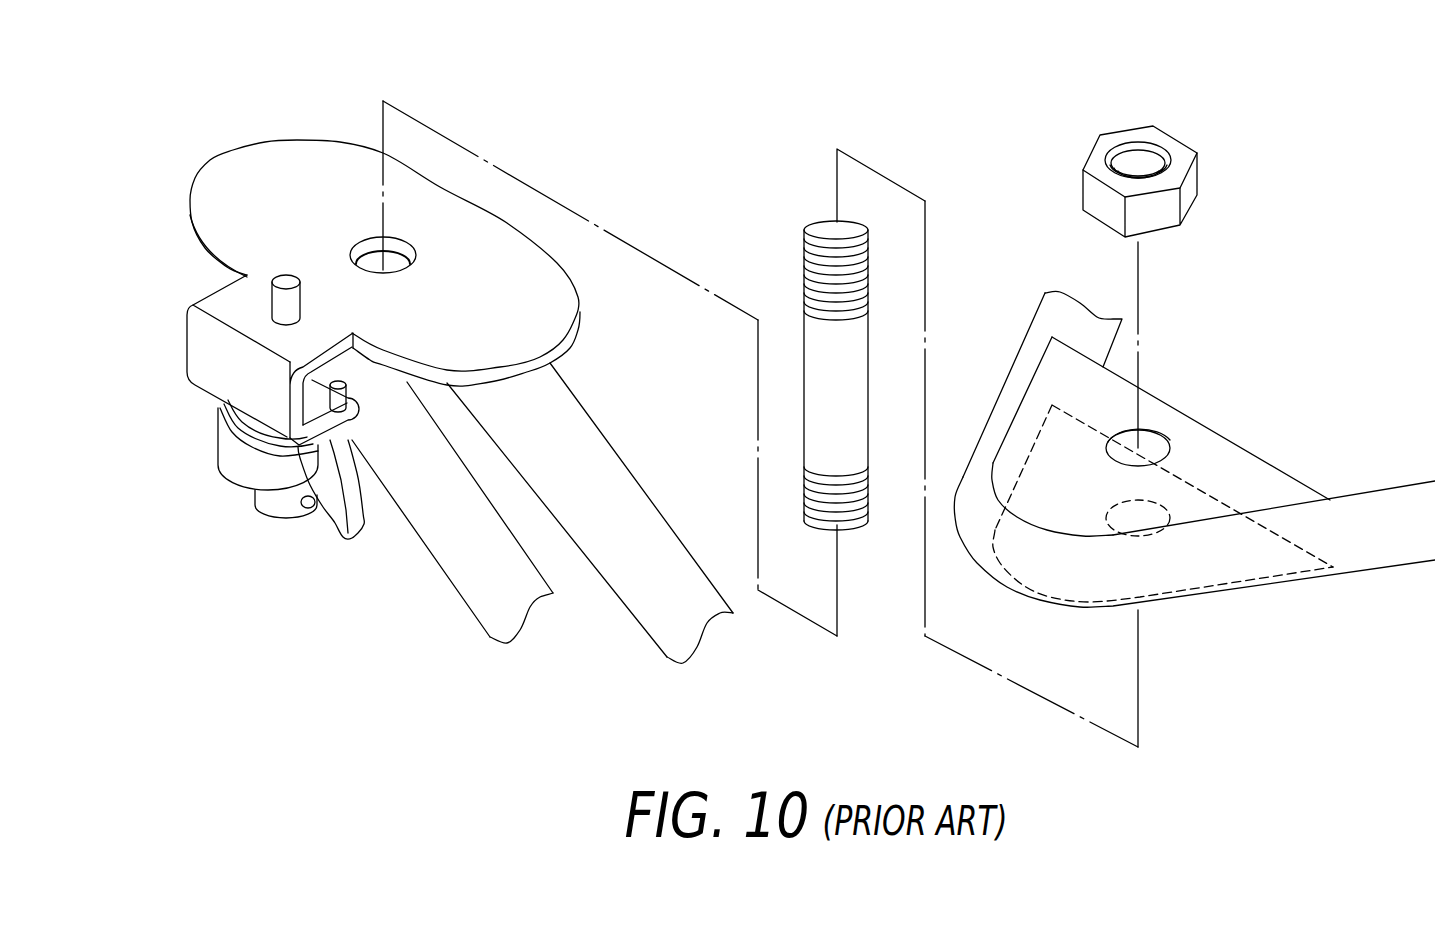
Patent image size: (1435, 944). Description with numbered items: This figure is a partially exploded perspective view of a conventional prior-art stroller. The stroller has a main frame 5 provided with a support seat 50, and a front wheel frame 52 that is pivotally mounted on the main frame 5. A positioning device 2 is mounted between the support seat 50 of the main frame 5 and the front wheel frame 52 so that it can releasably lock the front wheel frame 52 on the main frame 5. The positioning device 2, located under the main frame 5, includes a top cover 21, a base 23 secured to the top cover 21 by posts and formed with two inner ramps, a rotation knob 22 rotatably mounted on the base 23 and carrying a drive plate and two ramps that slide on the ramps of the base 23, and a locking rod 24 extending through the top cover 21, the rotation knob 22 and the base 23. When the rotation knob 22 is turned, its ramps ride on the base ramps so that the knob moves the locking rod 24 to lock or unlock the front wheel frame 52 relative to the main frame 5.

The positioning device 2 is at (345, 378).
The top cover 21 is at (227, 330).
The rotation knob 22 is at (335, 503).
The base 23 is at (228, 455).
The locking rod 24 is at (283, 280).
The main frame 5 is at (1364, 537).
The support seat 50 is at (1223, 472).
The front wheel frame 52 is at (643, 570).